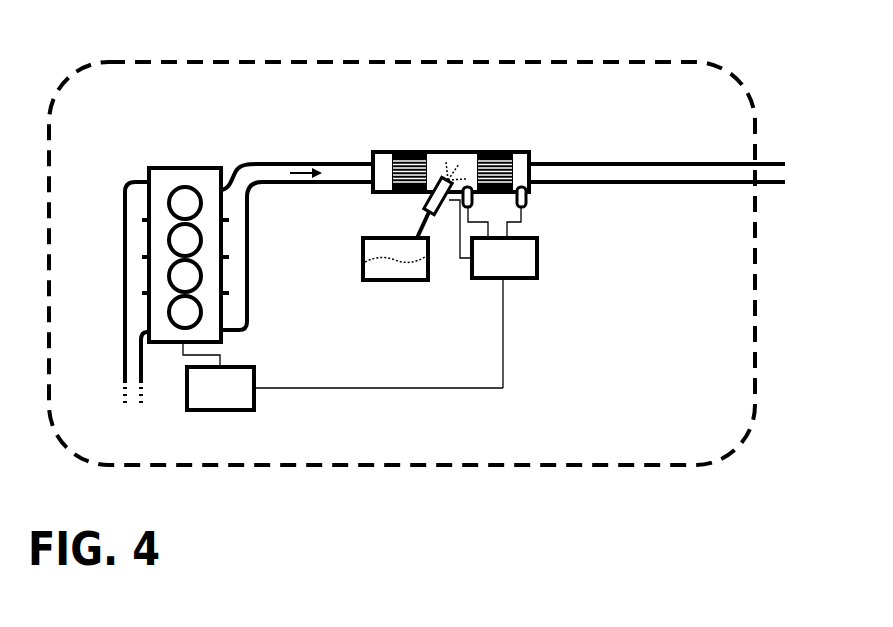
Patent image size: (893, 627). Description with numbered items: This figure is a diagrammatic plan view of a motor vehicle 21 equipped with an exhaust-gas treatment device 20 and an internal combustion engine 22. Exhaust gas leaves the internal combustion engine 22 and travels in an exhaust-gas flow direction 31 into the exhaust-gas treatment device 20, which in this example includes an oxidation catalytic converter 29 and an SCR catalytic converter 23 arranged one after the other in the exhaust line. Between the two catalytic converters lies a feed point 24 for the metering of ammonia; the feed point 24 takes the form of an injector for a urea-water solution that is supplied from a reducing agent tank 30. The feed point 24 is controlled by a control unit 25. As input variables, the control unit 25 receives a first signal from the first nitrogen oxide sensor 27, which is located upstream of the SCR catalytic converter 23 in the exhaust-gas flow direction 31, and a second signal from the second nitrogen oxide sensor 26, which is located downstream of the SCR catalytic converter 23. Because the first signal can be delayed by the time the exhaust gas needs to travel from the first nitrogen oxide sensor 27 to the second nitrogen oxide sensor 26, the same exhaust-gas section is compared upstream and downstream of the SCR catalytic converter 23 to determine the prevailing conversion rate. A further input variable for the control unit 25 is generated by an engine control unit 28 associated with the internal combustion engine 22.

The exhaust-gas treatment device 20 is at (536, 96).
The motor vehicle 21 is at (520, 63).
The internal combustion engine 22 is at (163, 167).
The SCR catalytic converter 23 is at (530, 160).
The feed point 24 is at (442, 208).
The control unit 25 is at (533, 278).
The second nitrogen oxide sensor 26 is at (472, 200).
The first nitrogen oxide sensor 27 is at (526, 198).
The engine control unit 28 is at (227, 410).
The oxidation catalytic converter 29 is at (375, 157).
The reducing agent tank 30 is at (382, 280).
The exhaust-gas flow direction 31 is at (290, 168).